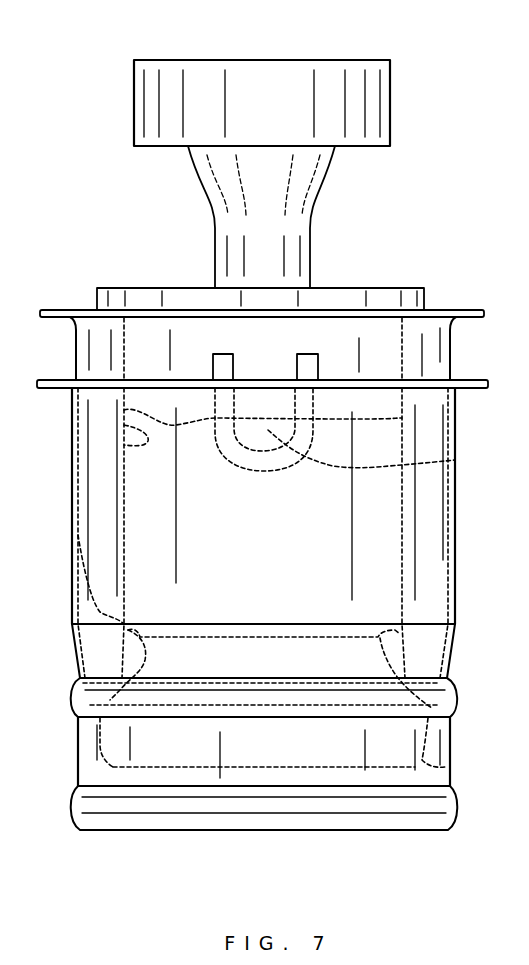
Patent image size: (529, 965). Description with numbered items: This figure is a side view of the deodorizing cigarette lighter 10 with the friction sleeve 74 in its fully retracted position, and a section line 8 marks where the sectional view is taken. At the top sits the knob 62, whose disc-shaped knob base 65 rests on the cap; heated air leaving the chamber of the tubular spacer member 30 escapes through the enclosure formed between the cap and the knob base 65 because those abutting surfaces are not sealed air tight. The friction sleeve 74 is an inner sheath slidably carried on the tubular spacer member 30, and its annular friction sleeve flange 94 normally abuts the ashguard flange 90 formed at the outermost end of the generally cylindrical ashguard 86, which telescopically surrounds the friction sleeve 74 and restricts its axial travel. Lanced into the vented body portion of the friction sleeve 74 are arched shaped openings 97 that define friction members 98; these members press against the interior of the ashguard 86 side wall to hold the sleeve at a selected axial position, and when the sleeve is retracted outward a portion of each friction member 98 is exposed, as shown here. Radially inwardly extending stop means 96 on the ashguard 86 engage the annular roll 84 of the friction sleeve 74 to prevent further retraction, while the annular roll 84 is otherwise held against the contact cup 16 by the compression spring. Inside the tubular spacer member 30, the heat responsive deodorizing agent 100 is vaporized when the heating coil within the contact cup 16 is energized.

The section line 8- 8 is at (232, 80).
The cigarette lighter 10 is at (342, 250).
The contact cup 16 is at (445, 767).
The tubular spacer member 30 is at (124, 443).
The knob 62 is at (392, 93).
The knob base 65 is at (380, 288).
The friction sleeve 74 is at (446, 350).
The annular roll 84 is at (78, 705).
The ashguard 86 is at (70, 540).
The ashguard flange 90 is at (488, 386).
The friction sleeve flange 94 is at (475, 310).
The stop means 96 is at (95, 665).
The arched shaped openings 97 is at (225, 370).
The friction members 98 is at (455, 460).
The deodorizing agent 100 is at (318, 503).